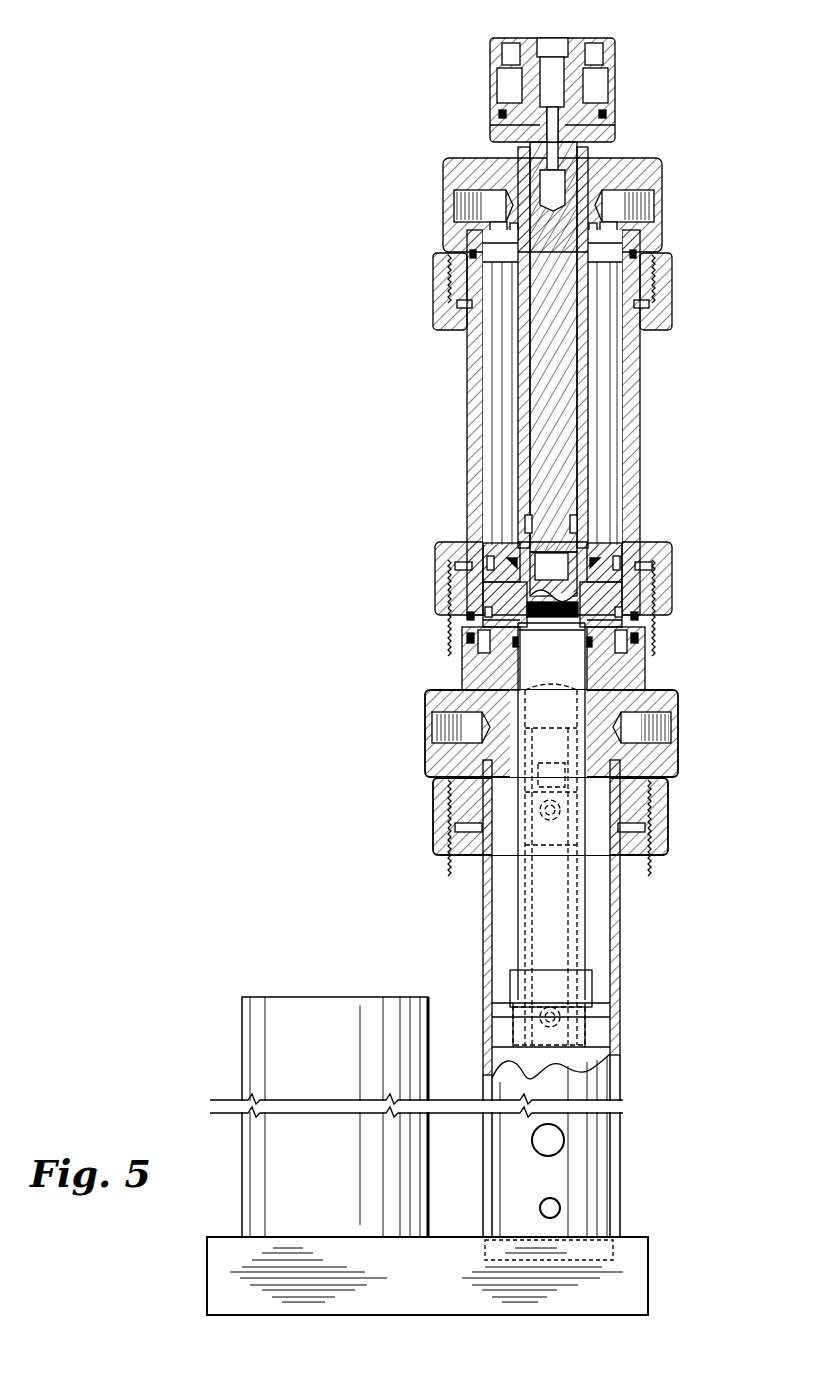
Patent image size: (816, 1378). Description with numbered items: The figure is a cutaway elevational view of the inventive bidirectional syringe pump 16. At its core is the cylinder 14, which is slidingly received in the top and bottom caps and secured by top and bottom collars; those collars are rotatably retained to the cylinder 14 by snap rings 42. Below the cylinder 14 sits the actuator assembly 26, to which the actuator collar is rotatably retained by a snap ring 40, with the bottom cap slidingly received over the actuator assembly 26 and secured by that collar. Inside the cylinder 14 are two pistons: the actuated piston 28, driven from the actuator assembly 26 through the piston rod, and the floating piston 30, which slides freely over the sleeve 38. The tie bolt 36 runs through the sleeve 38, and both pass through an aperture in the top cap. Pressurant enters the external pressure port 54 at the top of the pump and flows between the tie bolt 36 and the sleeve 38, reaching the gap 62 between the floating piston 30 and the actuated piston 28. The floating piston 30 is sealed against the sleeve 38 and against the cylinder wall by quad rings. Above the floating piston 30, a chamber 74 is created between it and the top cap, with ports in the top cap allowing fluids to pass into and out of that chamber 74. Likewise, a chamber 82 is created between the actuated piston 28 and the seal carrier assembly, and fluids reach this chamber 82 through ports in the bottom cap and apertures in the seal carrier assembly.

The cylinder 14 is at (466, 413).
The bidirectional syringe pump 16 is at (424, 173).
The actuator assembly 26 is at (620, 988).
The actuated piston 28 is at (638, 620).
The floating piston 30 is at (613, 543).
The tie bolt 36 is at (586, 462).
The sleeve 38 is at (585, 407).
The snap ring 40 is at (457, 823).
The snap rings 42 is at (440, 310).
The external pressure port 54 is at (556, 36).
The gap 62 is at (650, 577).
The chamber 74 is at (603, 340).
The chamber 82 is at (470, 637).